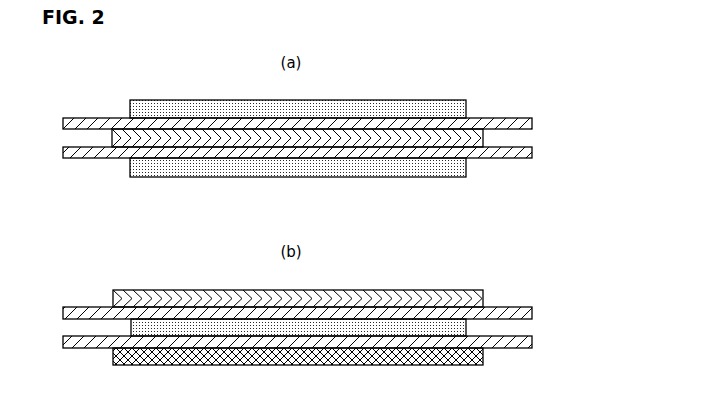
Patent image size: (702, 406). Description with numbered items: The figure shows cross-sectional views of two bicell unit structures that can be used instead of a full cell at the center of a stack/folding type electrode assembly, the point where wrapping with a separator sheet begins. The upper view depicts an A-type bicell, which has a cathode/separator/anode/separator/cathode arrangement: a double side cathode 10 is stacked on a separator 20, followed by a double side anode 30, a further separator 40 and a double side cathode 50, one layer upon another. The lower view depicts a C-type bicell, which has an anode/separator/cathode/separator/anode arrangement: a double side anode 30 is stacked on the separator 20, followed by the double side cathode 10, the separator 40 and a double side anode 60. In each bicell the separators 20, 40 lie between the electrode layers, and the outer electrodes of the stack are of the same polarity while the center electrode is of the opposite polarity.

The double side cathode 10 is at (466, 107).
The separator 20 is at (532, 121).
The double side anode 30 is at (483, 134).
The separator 40 is at (532, 153).
The double side cathode 50 is at (466, 167).
The double side anode 60 is at (483, 356).